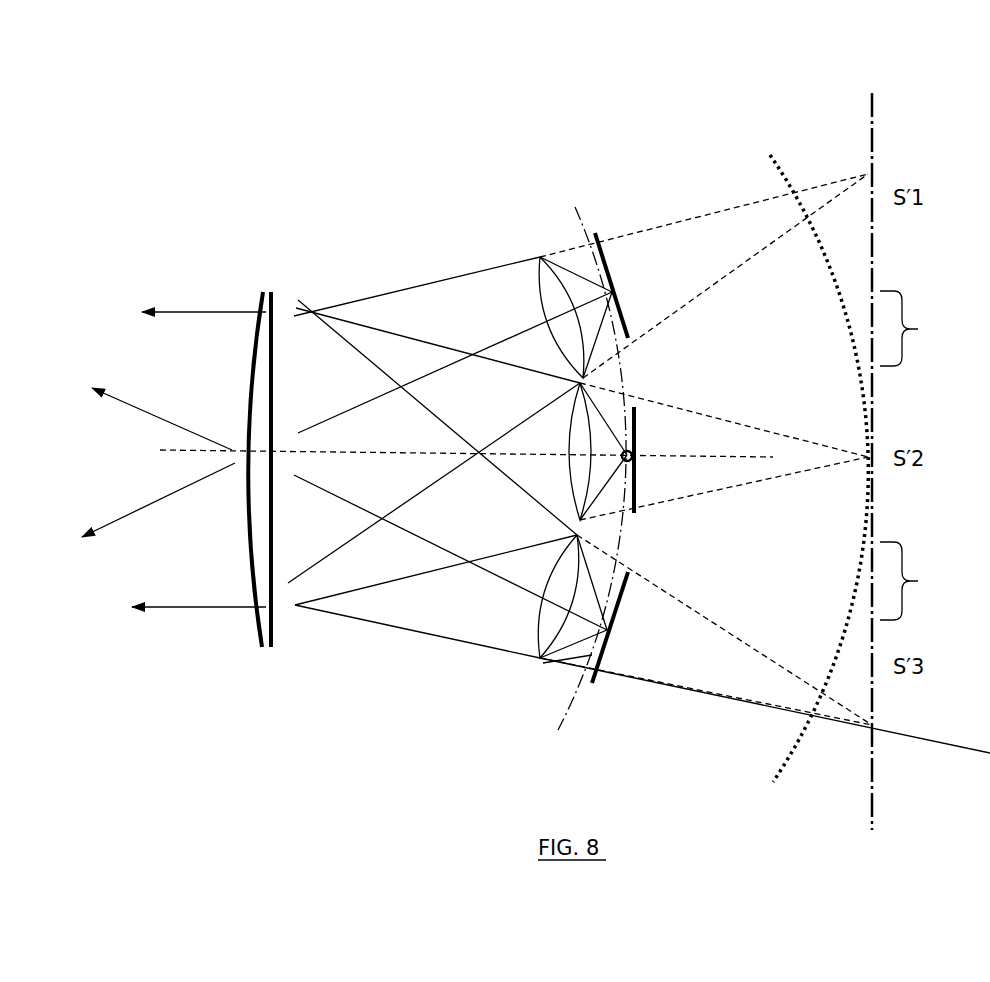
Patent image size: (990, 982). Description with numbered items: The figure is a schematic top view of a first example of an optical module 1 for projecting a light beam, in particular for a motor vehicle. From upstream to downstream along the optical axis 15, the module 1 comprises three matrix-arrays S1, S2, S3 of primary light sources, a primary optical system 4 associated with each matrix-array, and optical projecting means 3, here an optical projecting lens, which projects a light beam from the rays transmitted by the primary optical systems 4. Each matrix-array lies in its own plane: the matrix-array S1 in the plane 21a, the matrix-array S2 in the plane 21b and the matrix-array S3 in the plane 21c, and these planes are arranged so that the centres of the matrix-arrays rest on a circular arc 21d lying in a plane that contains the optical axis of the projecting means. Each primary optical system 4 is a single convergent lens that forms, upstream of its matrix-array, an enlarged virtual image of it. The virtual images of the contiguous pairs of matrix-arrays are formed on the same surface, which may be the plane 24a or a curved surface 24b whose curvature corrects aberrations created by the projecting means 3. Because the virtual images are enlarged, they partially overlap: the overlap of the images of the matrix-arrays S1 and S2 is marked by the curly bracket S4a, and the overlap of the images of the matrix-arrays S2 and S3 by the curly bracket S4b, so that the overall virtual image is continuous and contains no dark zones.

The optical module 1 is at (348, 136).
The optical projecting means 3 is at (258, 320).
The primary optical system 4 is at (540, 257).
The optical axis 15 is at (173, 448).
The plane 21a is at (565, 226).
The plane 21b is at (712, 432).
The plane 21c is at (540, 643).
The circular arc 21d is at (558, 730).
The plane 24a is at (868, 127).
The curved surface 24b is at (763, 150).
The matrix-array S1 is at (626, 285).
The matrix-array S2 is at (646, 460).
The matrix-array S3 is at (626, 627).
The curly bracket S4a is at (929, 328).
The curly bracket S4b is at (928, 581).